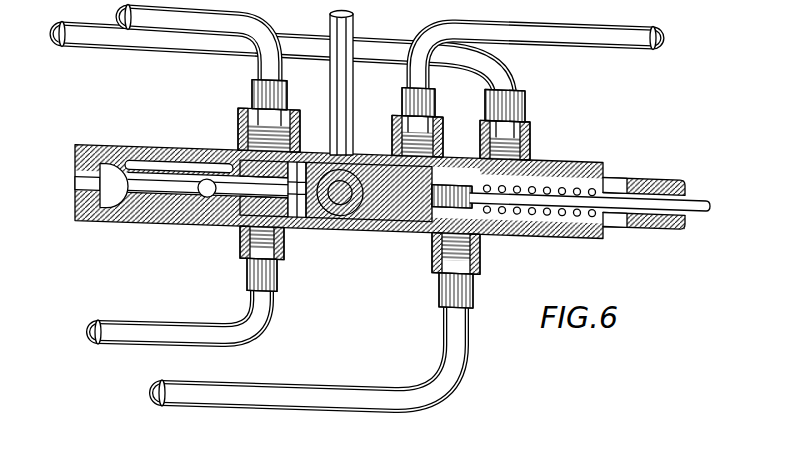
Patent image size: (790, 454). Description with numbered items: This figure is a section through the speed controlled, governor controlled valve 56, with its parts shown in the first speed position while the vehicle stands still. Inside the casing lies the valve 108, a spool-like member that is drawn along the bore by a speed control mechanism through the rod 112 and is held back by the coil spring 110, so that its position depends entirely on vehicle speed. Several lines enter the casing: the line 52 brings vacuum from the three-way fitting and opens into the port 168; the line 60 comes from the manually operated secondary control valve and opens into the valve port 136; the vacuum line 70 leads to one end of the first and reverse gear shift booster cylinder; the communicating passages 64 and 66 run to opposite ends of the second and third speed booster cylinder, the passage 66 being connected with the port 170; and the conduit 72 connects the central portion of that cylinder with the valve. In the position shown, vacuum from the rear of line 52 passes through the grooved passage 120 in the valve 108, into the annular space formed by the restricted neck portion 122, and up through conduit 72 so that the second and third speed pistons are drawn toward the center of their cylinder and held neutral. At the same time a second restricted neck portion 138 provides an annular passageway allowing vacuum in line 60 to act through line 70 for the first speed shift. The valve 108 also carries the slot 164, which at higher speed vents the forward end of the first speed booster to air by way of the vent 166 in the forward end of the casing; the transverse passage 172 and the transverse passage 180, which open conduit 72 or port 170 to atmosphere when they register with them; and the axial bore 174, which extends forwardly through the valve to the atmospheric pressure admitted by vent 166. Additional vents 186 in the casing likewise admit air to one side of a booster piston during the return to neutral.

The line 52 is at (337, 397).
The governor controlled valve 56 is at (553, 240).
The line 60 is at (140, 334).
The communicating passage 64 is at (90, 31).
The communicating passage 66 is at (594, 32).
The vacuum line 70 is at (186, 16).
The conduit 72 is at (356, 27).
The valve 108 is at (323, 232).
The coil spring 110 is at (552, 185).
The rod 112 is at (696, 205).
The grooved passage 120 is at (415, 236).
The restricted neck portion 122 is at (365, 153).
The valve port 136 is at (236, 229).
The restricted neck portion 138 is at (240, 147).
The slot 164 is at (157, 146).
The vent 166 is at (76, 181).
The port 168 is at (486, 240).
The port 170 is at (455, 150).
The transverse passage 172 is at (300, 153).
The axial bore 174 is at (160, 183).
The transverse passage 180 is at (203, 190).
The vents 186 is at (616, 226).